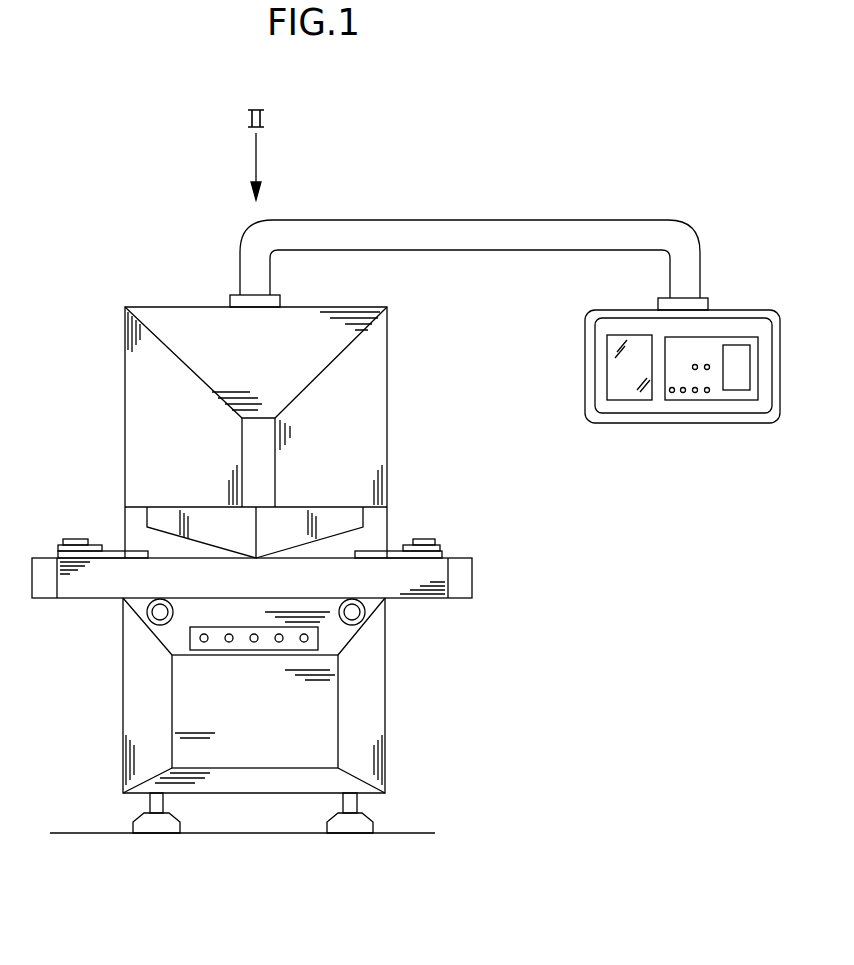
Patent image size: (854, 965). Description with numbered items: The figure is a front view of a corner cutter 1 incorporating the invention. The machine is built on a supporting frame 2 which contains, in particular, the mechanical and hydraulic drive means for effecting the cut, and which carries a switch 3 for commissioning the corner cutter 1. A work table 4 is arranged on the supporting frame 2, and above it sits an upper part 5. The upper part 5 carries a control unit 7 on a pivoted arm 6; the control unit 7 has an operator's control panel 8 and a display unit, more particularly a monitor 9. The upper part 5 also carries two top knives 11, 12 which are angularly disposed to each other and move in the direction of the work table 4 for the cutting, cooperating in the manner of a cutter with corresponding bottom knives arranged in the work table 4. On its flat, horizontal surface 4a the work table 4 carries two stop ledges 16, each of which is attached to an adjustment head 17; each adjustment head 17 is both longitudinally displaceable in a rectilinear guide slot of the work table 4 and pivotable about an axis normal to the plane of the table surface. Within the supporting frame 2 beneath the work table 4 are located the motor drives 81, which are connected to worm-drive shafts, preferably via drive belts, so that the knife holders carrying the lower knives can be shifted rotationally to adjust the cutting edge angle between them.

The corner cutter 1 is at (137, 266).
The supporting frame 2 is at (122, 725).
The switch 3 is at (262, 650).
The work table 4 is at (463, 584).
The flat horizontal surface 4a is at (463, 553).
The upper part 5 is at (133, 403).
The pivoted arm 6 is at (392, 221).
The control unit 7 is at (740, 310).
The operator's control panel 8 is at (720, 396).
The monitor 9 is at (627, 397).
The top knife 11 is at (208, 515).
The top knife 12 is at (327, 515).
The stop ledge 16 is at (115, 550).
The adjustment head 17 is at (60, 545).
The motor drive 81 is at (148, 617).